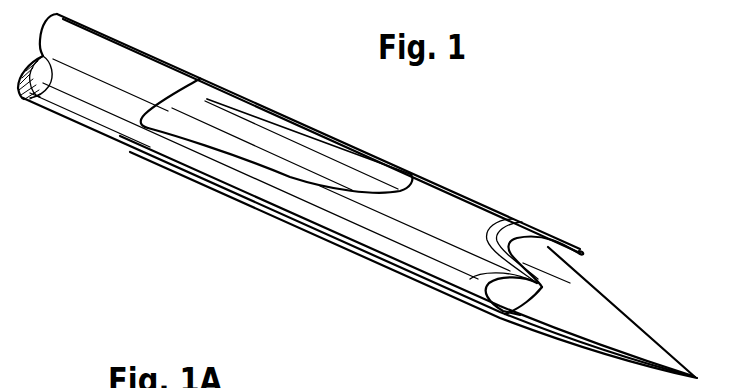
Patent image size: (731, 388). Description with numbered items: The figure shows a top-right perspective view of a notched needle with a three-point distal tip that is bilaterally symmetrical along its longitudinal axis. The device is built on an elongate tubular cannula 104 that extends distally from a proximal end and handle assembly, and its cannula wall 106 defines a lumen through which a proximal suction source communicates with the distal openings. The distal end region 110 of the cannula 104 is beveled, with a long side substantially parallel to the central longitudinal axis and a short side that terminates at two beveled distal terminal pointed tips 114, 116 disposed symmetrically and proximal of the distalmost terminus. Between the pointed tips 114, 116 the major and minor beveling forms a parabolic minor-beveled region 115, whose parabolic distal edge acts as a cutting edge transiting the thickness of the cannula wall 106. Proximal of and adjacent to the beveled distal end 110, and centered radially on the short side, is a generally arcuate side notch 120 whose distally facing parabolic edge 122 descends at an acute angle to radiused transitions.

The cannula 104 is at (66, 141).
The cannula wall 106 is at (428, 178).
The distal end region 110 is at (618, 302).
The pointed tip 114 is at (583, 250).
The parabolic minor-beveled region 115 is at (501, 233).
The pointed tip 116 is at (522, 311).
The side notch 120 is at (279, 102).
The parabolic section 122 is at (248, 92).